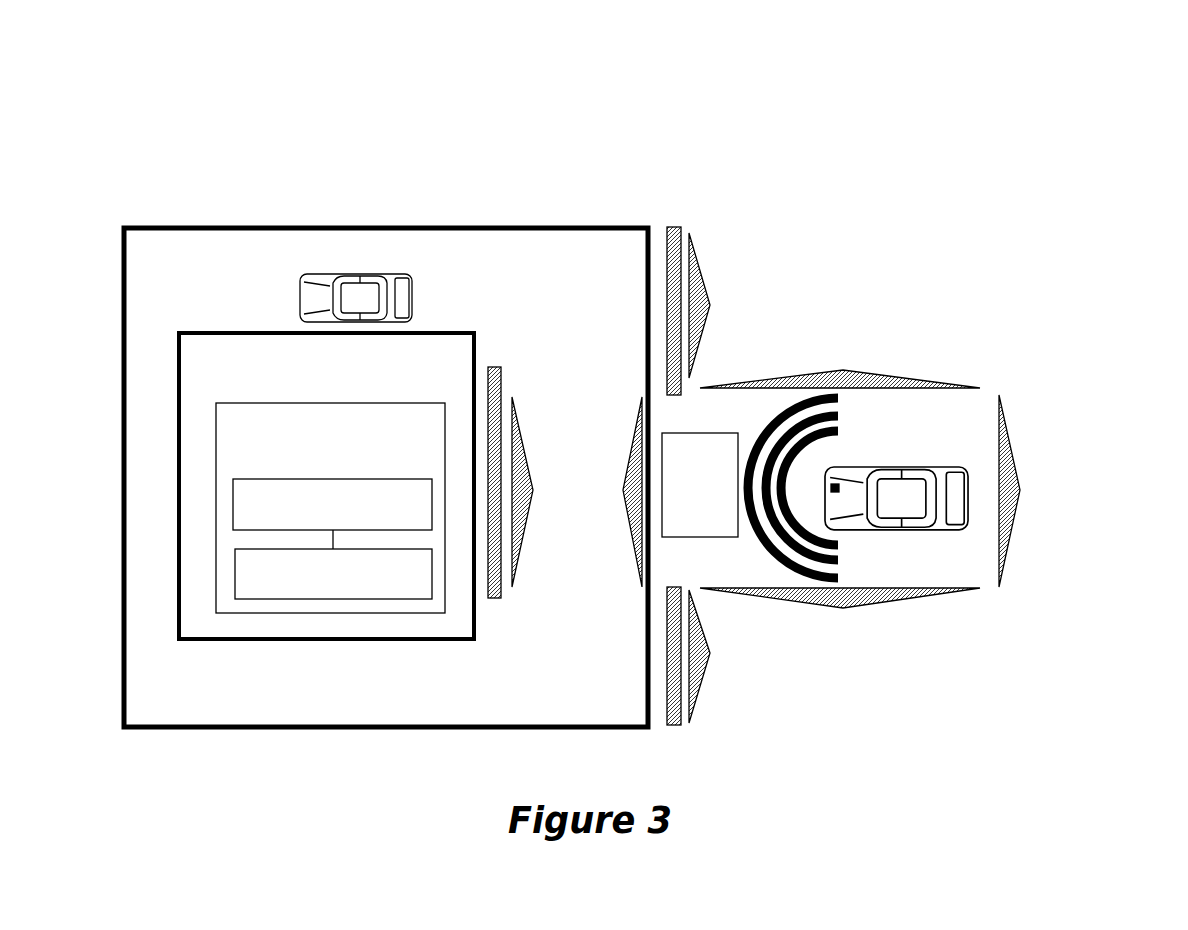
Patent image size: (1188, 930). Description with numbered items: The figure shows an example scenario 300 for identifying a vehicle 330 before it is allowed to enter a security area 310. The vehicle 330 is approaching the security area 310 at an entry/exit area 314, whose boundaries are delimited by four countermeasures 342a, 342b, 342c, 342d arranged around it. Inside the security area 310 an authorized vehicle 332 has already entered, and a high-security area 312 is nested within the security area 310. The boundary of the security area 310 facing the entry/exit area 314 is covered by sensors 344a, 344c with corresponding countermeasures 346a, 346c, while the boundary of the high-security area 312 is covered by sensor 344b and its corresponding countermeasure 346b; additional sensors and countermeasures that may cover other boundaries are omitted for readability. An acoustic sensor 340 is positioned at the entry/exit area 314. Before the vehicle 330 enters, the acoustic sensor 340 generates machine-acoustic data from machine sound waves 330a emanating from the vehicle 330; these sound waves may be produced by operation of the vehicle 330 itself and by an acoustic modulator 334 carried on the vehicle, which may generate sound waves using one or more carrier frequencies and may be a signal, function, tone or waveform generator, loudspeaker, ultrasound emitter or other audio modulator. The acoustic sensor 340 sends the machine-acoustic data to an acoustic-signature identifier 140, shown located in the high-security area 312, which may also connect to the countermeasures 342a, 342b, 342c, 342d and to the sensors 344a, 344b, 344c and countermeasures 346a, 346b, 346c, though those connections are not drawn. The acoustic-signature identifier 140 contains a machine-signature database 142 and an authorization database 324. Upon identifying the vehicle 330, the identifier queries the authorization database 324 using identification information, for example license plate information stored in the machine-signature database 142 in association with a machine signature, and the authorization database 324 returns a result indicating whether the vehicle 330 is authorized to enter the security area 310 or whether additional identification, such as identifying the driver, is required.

The scenario 300 is at (1086, 45).
The security area 310 is at (548, 279).
The high-security area 312 is at (413, 362).
The entry/exit area 314 is at (673, 423).
The acoustic-signature identifier 140 is at (344, 459).
The machine-signature database 142 is at (399, 526).
The authorization database 324 is at (399, 596).
The authorized vehicle 332 is at (350, 281).
The vehicle 330 is at (885, 507).
The machine sound waves 330a is at (847, 578).
The acoustic modulator 334 is at (838, 485).
The acoustic sensor 340 is at (682, 507).
The countermeasure 342a is at (843, 370).
The countermeasure 342b is at (623, 490).
The countermeasure 342c is at (1020, 490).
The countermeasure 342d is at (843, 608).
The sensor 344a is at (674, 227).
The sensor 344b is at (495, 367).
The sensor 344c is at (674, 725).
The countermeasure 346a is at (710, 305).
The countermeasure 346b is at (534, 490).
The countermeasure 346c is at (710, 653).